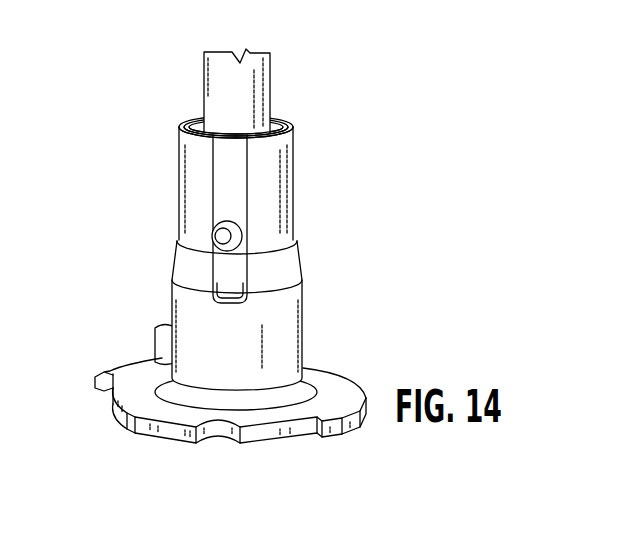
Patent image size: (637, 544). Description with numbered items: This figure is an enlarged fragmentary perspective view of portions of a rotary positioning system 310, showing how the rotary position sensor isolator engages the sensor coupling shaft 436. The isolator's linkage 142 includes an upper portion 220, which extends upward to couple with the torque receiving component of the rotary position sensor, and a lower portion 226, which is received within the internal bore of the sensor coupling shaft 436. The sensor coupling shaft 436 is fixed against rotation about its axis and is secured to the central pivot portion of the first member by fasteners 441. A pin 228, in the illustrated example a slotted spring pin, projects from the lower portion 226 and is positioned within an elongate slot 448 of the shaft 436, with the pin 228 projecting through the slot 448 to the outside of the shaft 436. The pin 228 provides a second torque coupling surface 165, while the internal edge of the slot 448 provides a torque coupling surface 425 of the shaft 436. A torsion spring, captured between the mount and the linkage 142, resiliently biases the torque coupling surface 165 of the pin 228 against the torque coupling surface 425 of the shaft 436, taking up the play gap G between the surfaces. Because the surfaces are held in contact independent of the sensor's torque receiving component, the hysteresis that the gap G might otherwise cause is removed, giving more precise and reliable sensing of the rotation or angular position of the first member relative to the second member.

The locking assembly 310 is at (100, 70).
The upper portion 220 is at (274, 57).
The linkage 142 is at (276, 87).
The lower portion 226 is at (203, 88).
The slot 448 is at (250, 178).
The torque coupling surface 425 is at (213, 205).
The pin 228 is at (240, 222).
The gap G is at (256, 241).
The second torque coupling surface 165 is at (178, 246).
The sensor coupling shaft 436 is at (308, 296).
The fasteners 441 is at (155, 335).